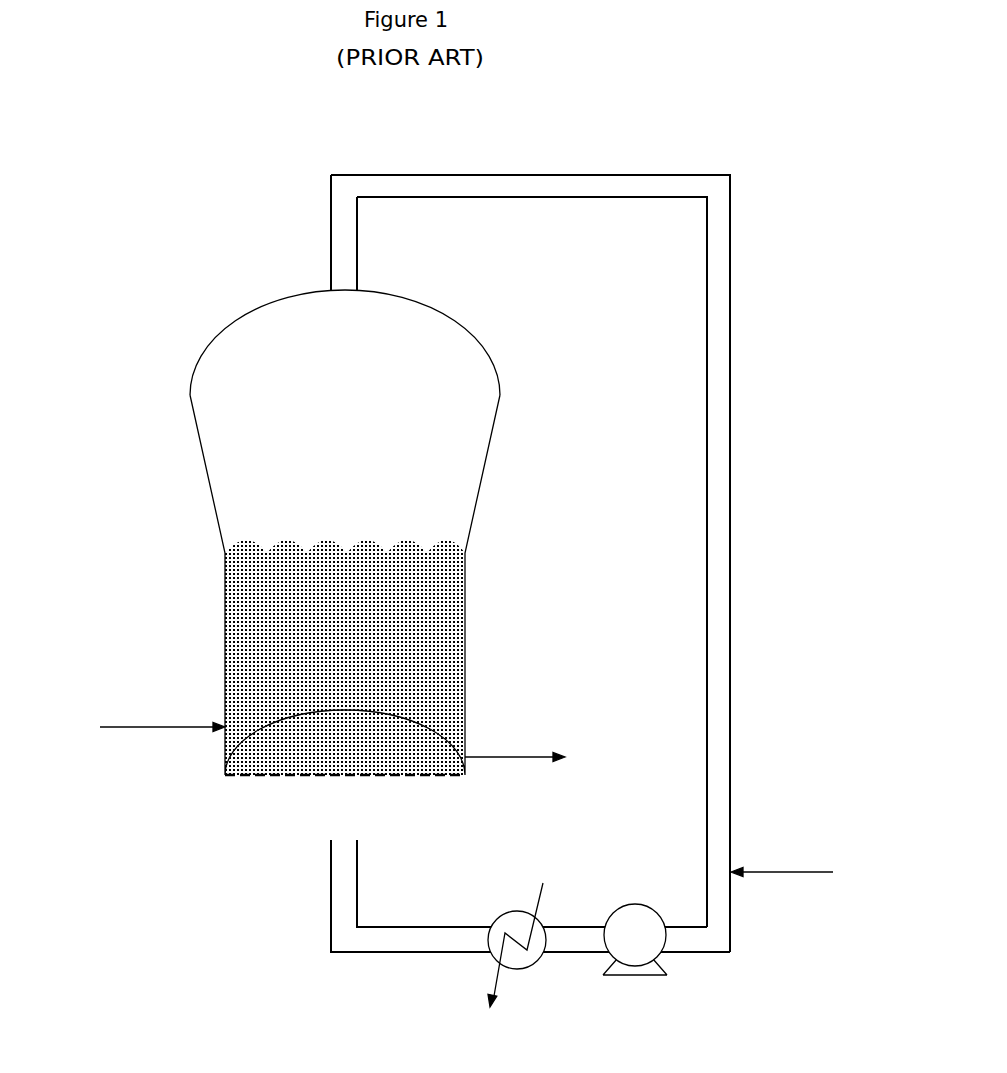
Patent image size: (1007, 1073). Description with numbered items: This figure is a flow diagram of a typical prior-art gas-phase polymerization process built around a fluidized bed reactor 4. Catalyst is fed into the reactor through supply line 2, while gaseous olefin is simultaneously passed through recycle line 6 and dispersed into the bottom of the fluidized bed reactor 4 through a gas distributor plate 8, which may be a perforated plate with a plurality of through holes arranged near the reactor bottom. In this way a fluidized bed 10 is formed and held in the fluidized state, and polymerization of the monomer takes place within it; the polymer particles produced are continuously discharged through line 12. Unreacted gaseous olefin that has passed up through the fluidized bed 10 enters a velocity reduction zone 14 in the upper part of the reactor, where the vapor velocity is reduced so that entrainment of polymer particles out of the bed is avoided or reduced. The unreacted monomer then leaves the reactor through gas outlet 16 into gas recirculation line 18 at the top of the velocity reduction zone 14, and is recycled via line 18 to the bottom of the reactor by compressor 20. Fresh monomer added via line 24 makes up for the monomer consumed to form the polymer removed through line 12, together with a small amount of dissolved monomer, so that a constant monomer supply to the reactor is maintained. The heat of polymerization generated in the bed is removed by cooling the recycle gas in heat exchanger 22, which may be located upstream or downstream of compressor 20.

The supply line 2 is at (152, 728).
The fluidized bed reactor 4 is at (214, 520).
The recycle line 6 is at (386, 956).
The gas distributor plate 8 is at (397, 778).
The fluidized bed 10 is at (345, 657).
The line 12 is at (541, 758).
The velocity reduction zone 14 is at (345, 349).
The gas outlet 16 is at (328, 286).
The gas recirculation line 18 is at (457, 203).
The compressor 20 is at (650, 978).
The heat exchanger 22 is at (526, 974).
The line 24 is at (808, 876).